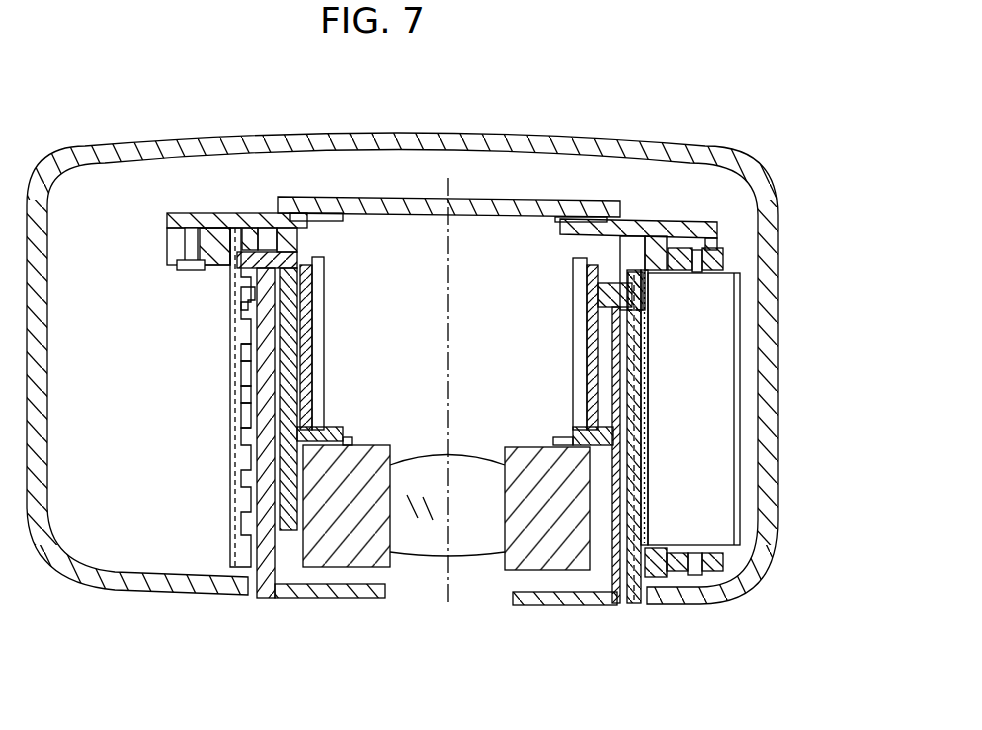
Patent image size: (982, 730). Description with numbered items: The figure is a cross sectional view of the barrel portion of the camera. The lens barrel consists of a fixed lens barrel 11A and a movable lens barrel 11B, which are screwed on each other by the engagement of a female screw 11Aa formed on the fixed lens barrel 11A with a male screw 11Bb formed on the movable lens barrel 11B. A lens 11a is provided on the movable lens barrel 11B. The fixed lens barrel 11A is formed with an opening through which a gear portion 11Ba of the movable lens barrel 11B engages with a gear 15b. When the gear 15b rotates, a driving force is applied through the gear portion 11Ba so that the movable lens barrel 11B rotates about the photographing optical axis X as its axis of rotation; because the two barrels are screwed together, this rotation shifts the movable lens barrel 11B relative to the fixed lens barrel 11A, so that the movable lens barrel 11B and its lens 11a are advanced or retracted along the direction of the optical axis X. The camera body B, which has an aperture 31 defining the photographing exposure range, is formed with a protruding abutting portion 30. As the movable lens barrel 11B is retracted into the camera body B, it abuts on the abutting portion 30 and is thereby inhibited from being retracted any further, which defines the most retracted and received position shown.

The fixed lens barrel 11A is at (238, 553).
The female screw 11Aa is at (252, 390).
The movable lens barrel 11B is at (449, 482).
The gear portion 11Ba is at (652, 290).
The male screw 11Bb is at (247, 293).
The lens 11a is at (422, 462).
The gear 15b is at (710, 380).
The abutting portion 30 is at (302, 232).
The aperture 31 is at (493, 225).
The photographing optical axis X is at (450, 287).
The camera body B is at (227, 213).